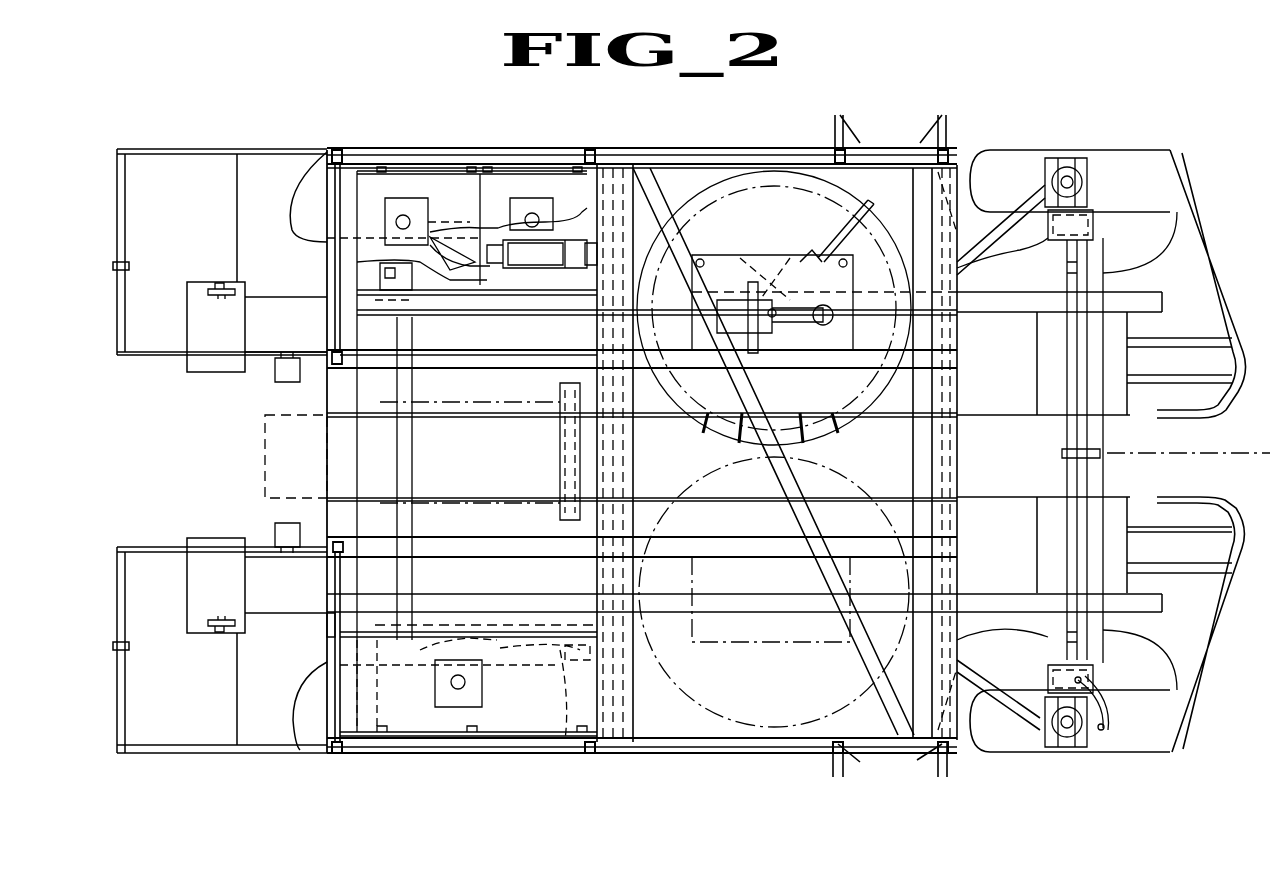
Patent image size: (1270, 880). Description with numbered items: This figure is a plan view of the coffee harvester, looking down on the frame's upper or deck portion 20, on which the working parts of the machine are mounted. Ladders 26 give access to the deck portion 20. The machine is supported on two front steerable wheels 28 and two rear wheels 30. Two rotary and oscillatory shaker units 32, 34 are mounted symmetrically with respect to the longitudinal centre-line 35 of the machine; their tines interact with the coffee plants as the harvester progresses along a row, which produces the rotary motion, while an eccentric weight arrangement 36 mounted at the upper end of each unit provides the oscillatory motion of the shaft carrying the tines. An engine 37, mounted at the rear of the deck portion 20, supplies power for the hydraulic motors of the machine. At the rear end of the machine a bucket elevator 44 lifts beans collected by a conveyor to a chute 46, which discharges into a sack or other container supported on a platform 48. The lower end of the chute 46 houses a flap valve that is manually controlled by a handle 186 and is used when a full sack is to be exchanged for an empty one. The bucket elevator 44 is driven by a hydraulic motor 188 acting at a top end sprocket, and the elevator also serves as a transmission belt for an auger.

The deck portion 20 is at (491, 545).
The ladders 26 is at (887, 760).
The front steerable wheels 28 is at (1122, 156).
The rear wheels 30 is at (290, 230).
The shaker unit 32 is at (740, 722).
The shaker unit 34 is at (752, 178).
The longitudinal centre-line 35 is at (1197, 447).
The eccentric weight arrangement 36 is at (769, 252).
The engine 37 is at (583, 455).
The bucket elevator 44 is at (306, 343).
The chute 46 is at (233, 343).
The platform 48 is at (135, 216).
The handle 186 is at (232, 288).
The hydraulic motor 188 is at (286, 373).